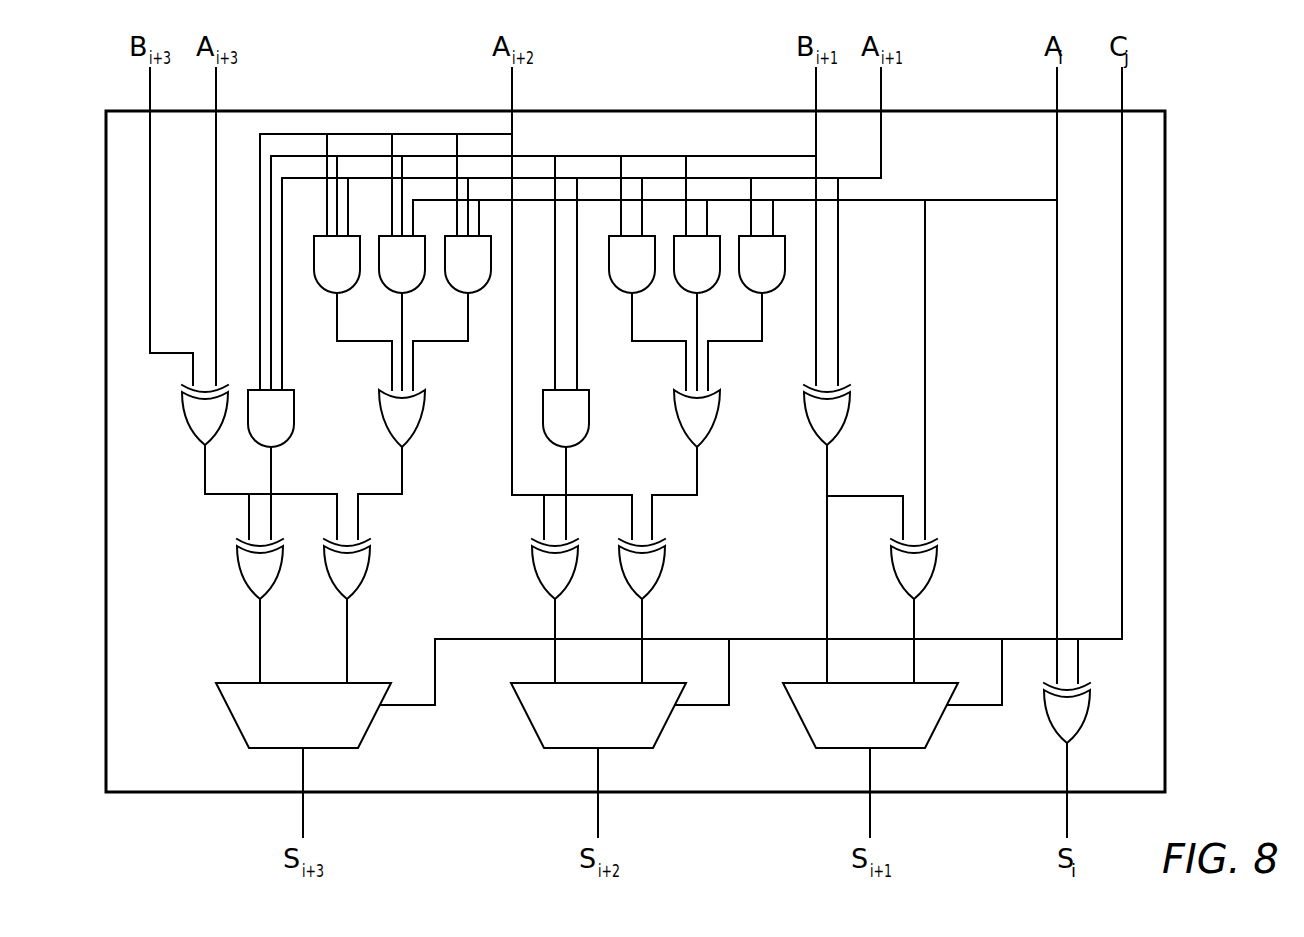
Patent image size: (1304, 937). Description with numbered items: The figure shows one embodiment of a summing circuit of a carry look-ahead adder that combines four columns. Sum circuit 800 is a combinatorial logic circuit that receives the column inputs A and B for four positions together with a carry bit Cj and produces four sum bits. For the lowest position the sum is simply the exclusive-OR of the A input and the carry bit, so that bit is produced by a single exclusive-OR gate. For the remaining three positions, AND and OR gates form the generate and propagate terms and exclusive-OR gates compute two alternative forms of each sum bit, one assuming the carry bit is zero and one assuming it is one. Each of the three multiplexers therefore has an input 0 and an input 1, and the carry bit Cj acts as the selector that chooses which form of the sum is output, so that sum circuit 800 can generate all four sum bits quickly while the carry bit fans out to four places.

The sum circuit 800 is at (635, 452).
The multiplexer input for carry-in equal to zero 0 is at (536, 629).
The multiplexer input for carry-in equal to one 1 is at (630, 629).